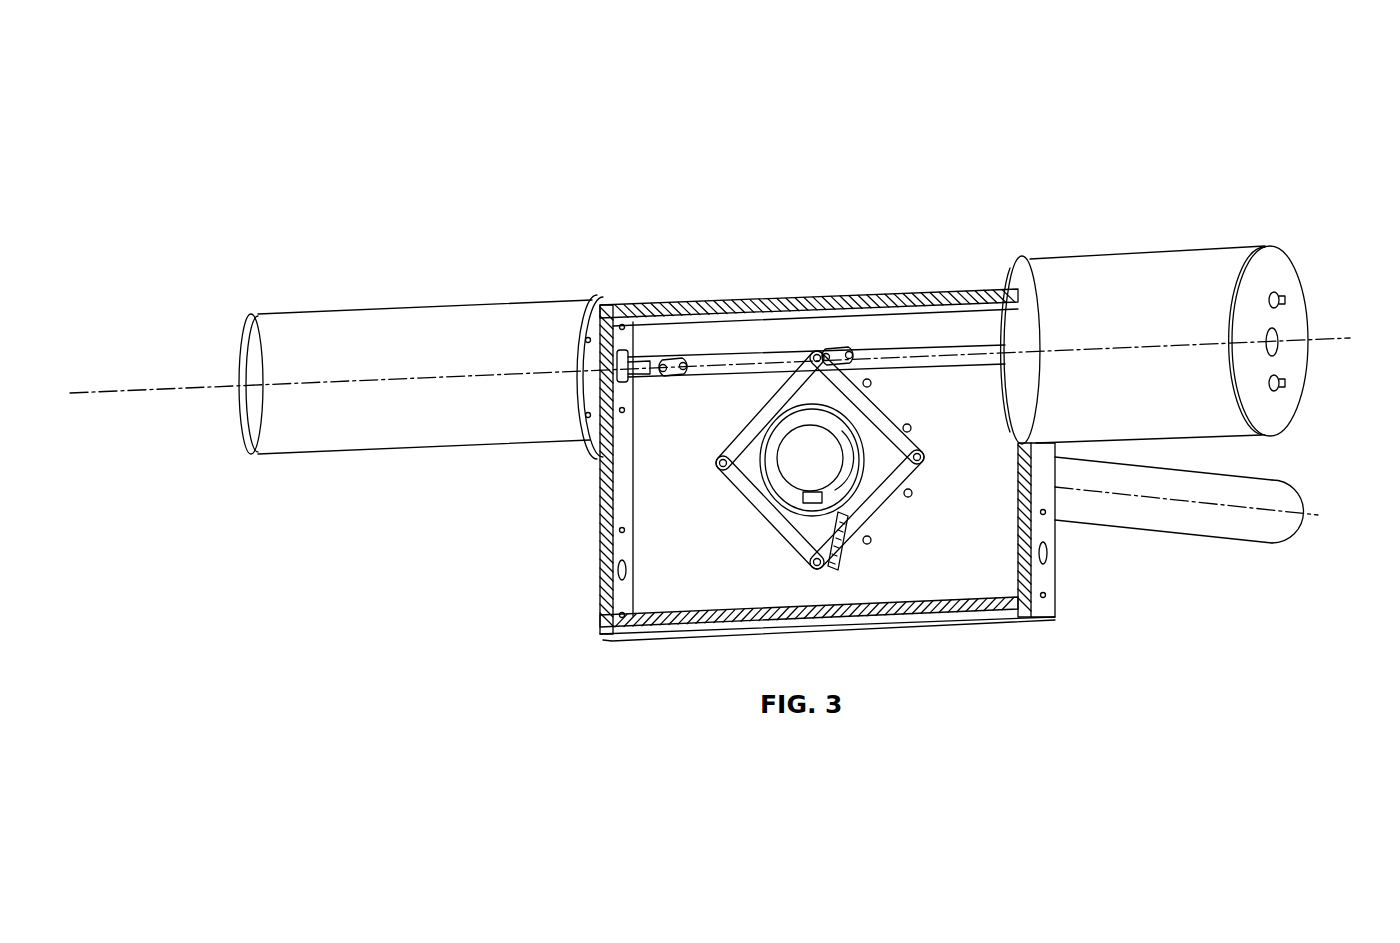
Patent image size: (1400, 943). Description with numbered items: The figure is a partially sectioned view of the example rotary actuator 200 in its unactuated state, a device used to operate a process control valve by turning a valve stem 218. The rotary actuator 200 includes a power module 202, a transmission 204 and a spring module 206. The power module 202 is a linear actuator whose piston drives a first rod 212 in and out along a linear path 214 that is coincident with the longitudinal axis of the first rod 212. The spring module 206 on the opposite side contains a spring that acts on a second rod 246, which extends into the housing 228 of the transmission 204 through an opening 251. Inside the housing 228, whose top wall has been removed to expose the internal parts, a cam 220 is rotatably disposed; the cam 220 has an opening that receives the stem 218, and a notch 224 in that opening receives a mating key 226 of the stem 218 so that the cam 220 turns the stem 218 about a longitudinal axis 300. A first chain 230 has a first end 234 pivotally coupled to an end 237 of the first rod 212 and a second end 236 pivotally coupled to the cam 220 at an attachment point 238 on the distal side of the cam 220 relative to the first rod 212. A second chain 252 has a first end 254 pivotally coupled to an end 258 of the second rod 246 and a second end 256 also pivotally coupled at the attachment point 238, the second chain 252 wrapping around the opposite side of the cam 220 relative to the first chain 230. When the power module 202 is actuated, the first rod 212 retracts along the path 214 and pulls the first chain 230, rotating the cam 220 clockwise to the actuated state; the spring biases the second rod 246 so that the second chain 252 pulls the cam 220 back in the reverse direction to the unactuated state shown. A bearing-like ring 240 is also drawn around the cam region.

The rotary actuator 200 is at (209, 207).
The power module 202 is at (1201, 250).
The transmission 204 is at (931, 288).
The spring module 206 is at (431, 310).
The first rod 212 is at (955, 358).
The path 214 is at (1348, 348).
The stem 218 is at (1120, 527).
The cam 220 is at (718, 467).
The notch 224 is at (808, 500).
The key 226 is at (798, 540).
The housing 228 is at (620, 503).
The first chain 230 is at (765, 440).
The first end 234 is at (845, 348).
The second end 236 is at (795, 548).
The end 237 is at (920, 345).
The attachment point 238 is at (848, 565).
The upper link 240 is at (865, 400).
The second rod 246 is at (620, 345).
The opening 251 is at (596, 302).
The second chain 252 is at (848, 480).
The first end 254 is at (672, 358).
The second end 256 is at (900, 540).
The end 258 is at (648, 362).
The longitudinal axis 300 is at (1300, 512).